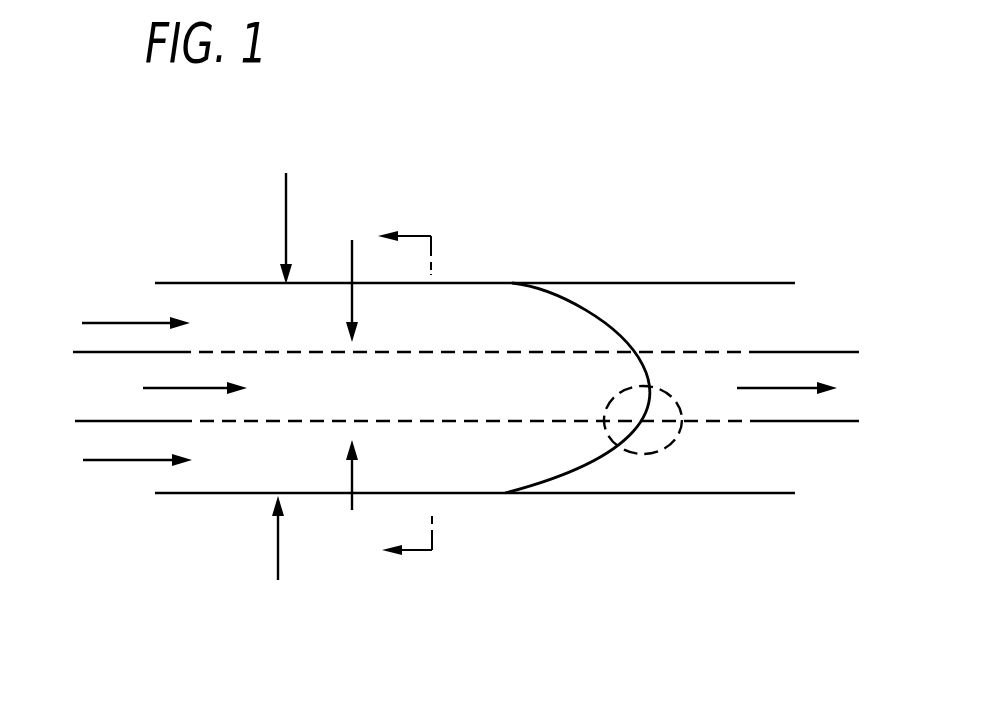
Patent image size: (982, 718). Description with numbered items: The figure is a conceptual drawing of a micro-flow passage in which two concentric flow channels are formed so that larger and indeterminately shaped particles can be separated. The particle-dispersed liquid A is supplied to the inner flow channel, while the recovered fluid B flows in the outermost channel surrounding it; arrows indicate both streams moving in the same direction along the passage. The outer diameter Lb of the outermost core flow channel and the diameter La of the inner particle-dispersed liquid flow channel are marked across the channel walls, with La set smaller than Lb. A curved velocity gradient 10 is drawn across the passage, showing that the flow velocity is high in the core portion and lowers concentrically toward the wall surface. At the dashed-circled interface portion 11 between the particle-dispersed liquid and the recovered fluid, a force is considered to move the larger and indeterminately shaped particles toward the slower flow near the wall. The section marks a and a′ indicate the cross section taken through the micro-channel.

The velocity gradient 10 is at (588, 309).
The interface portion 11 is at (653, 455).
The particle-dispersed liquid A is at (439, 420).
The recovered fluid B is at (116, 323).
The diameter of the particle-dispersed liquid flow channel La is at (351, 359).
The outer diameter of the outermost core flow channel Lb is at (284, 361).
The cross section a-a′ a is at (404, 235).
The cross section a- a′ is at (408, 553).